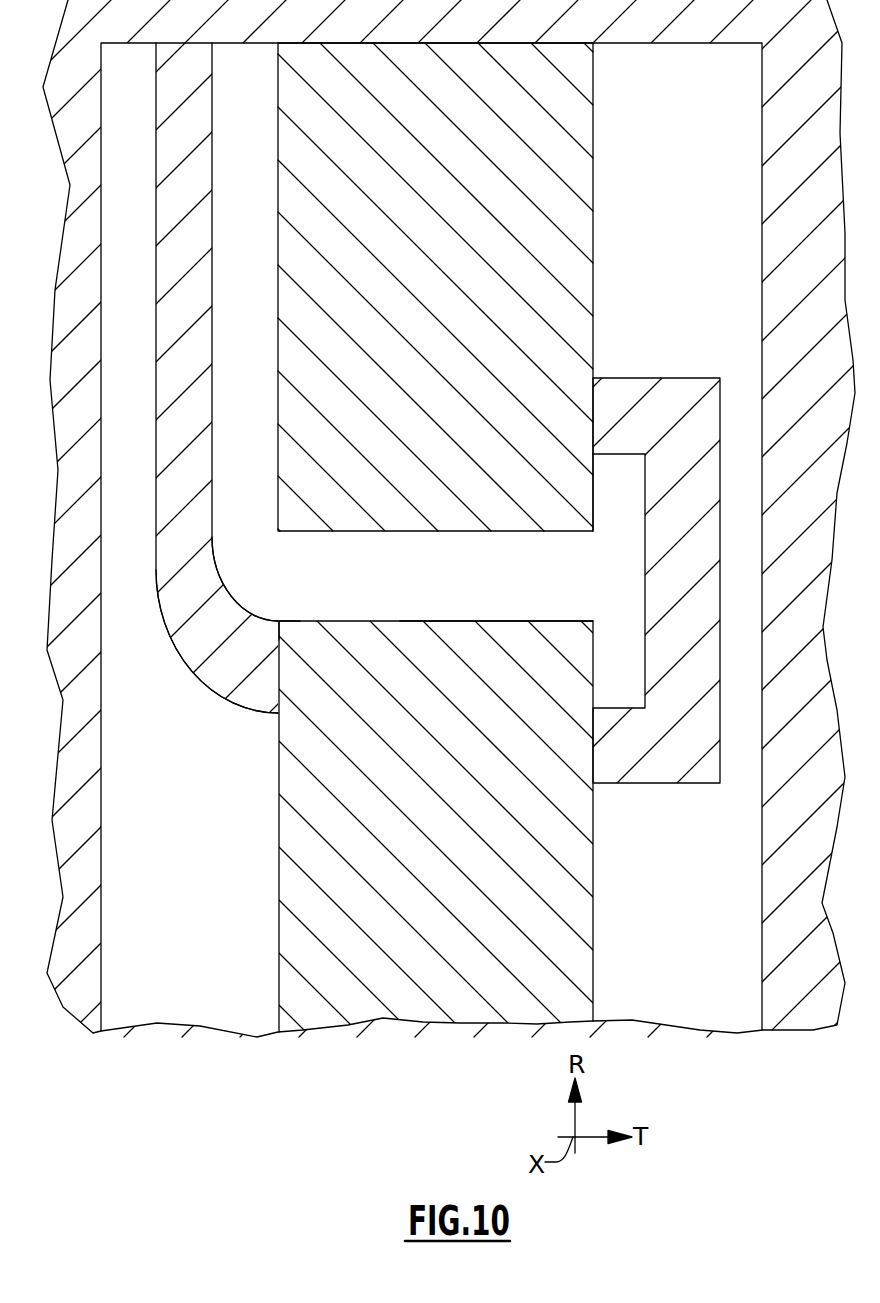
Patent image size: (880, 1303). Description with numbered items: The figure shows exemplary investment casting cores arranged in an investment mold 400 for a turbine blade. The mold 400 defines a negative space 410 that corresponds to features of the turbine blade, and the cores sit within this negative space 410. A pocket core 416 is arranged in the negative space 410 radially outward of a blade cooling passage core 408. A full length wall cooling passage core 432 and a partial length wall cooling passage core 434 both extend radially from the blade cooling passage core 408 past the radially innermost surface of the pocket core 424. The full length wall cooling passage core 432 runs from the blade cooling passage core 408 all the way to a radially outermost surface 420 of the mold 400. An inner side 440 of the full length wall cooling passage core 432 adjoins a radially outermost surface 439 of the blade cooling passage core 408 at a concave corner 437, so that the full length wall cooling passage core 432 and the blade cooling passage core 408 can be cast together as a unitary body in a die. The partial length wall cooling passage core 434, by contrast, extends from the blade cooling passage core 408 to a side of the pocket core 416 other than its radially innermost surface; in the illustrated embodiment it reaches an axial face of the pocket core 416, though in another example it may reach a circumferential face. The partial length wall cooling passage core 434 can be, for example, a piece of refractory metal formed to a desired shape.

The investment mold 400 is at (762, 943).
The blade cooling passage core 408 is at (279, 883).
The negative space 410 is at (695, 210).
The pocket core 416 is at (593, 515).
The radially outermost surface of the mold 420 is at (232, 43).
The pocket core 424 is at (397, 531).
The full length wall cooling passage core 432 is at (243, 700).
The partial length wall cooling passage core 434 is at (698, 783).
The concave corner 437 is at (280, 621).
The radially outermost surface of the blade cooling passage core 439 is at (498, 622).
The inner side of the full length wall cooling passage core 440 is at (213, 537).